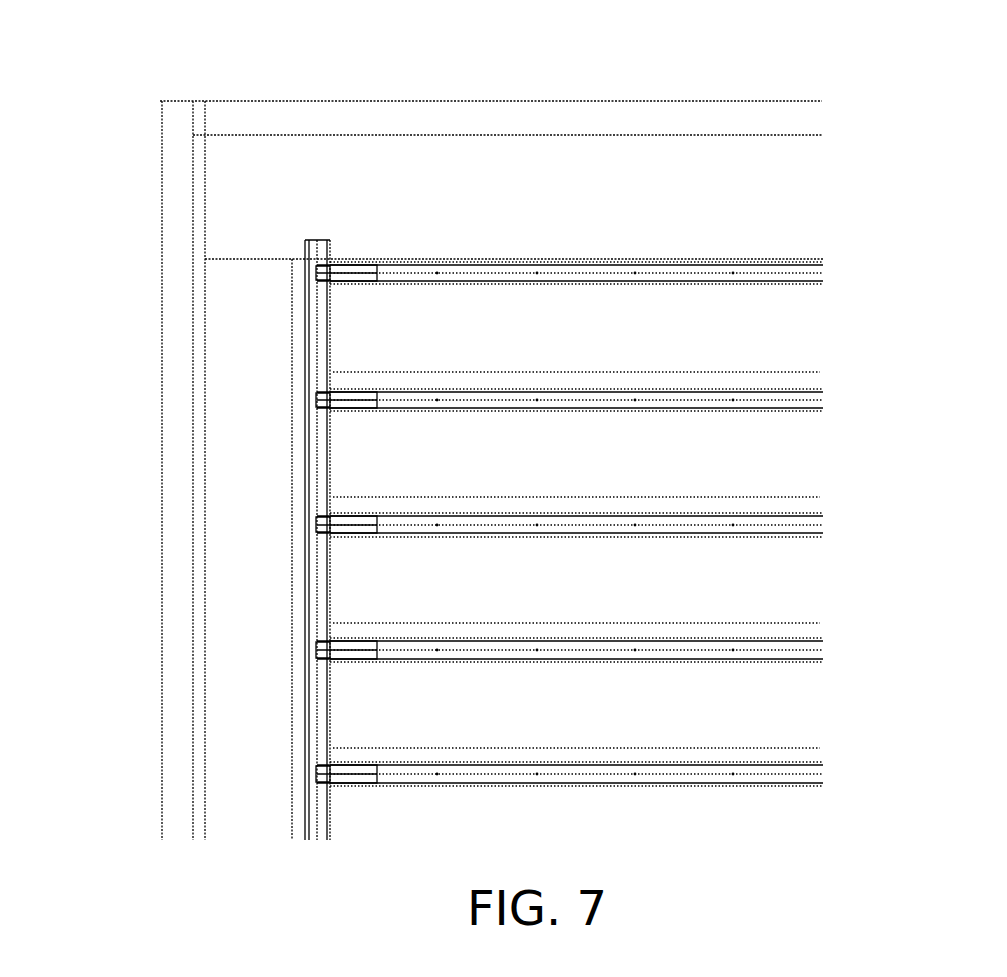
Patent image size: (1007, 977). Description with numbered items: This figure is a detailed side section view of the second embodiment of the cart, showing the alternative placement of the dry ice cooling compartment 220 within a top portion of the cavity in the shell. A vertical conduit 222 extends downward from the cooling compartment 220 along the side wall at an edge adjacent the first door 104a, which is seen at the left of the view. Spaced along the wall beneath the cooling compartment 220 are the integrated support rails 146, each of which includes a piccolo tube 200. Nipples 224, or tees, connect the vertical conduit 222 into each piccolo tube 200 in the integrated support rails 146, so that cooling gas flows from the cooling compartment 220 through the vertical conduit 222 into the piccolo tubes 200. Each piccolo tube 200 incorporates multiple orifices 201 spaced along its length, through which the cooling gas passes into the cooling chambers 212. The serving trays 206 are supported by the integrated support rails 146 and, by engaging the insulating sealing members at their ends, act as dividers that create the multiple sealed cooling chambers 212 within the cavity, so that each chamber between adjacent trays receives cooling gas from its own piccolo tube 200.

The first door 104a is at (160, 634).
The cooling compartment 220 is at (537, 182).
The vertical conduit 222 is at (313, 238).
The nipples 224 is at (347, 280).
The piccolo tube 200 is at (681, 408).
The orifices 201 is at (537, 398).
The serving trays 206 is at (674, 376).
The integrated support rails 146 is at (820, 389).
The cooling chambers 212 is at (495, 346).